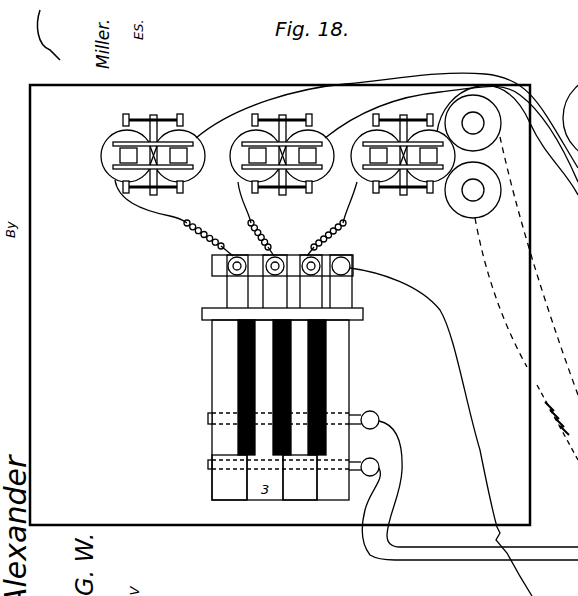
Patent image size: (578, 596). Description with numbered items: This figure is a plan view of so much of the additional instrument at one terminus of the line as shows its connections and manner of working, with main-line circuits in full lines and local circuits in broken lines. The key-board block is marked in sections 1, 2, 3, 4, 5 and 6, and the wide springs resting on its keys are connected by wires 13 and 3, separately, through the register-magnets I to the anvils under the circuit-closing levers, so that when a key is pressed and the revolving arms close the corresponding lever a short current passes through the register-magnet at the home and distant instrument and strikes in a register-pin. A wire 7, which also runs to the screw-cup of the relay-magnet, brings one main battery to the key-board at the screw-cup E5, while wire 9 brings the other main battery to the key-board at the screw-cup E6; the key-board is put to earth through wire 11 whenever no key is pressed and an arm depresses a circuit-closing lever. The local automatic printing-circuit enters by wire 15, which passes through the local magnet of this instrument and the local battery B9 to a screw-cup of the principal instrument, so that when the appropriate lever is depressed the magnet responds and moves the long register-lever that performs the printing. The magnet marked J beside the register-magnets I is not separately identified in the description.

The wire 1 is at (229, 477).
The wire 2 is at (246, 387).
The wire 3 is at (387, 128).
The block section 4 is at (282, 387).
The wire 5 is at (300, 477).
The wire 6 is at (317, 387).
The wire 7 is at (478, 484).
The wire 9 is at (470, 522).
The wire 11 is at (441, 432).
The wire 13 is at (236, 218).
The wire 15 is at (526, 266).
The local battery B9 is at (557, 422).
The screw-cup E5 is at (372, 413).
The screw-cup E6 is at (372, 460).
The register-magnet I is at (473, 123).
The cylinder J is at (473, 190).